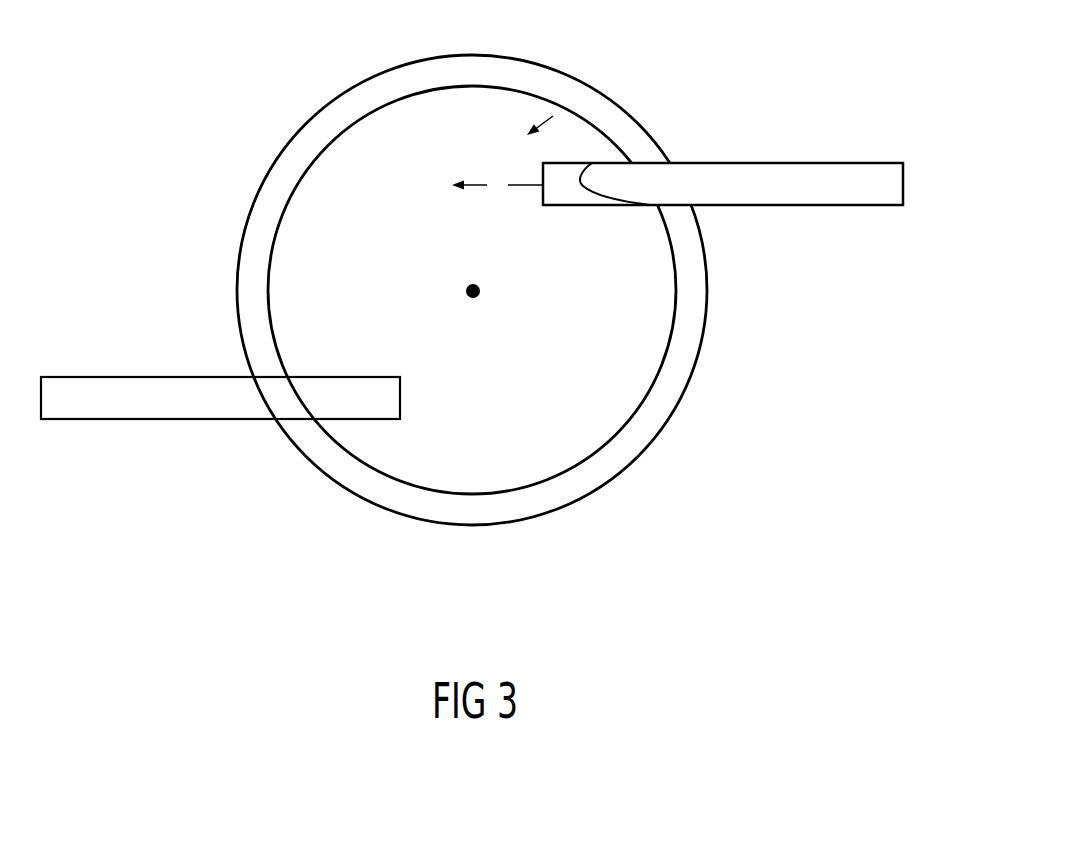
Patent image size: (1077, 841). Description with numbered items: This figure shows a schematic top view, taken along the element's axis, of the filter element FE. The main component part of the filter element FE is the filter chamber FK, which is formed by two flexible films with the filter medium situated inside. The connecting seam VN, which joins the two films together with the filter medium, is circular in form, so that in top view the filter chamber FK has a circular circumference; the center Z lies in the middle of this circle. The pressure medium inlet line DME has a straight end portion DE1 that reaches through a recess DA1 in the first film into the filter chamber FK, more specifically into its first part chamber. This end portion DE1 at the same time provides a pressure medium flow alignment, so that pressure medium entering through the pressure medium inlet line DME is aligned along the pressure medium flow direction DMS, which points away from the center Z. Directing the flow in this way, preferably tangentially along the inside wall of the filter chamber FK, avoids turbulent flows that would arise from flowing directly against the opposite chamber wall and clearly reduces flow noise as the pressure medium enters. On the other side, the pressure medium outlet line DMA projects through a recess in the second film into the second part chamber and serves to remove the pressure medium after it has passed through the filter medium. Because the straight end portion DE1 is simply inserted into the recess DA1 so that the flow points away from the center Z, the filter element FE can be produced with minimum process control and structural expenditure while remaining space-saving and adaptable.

The filter element FE is at (640, 551).
The connecting seam VN is at (670, 378).
The pressure medium outlet line DMA is at (158, 420).
The pressure medium inlet line DME is at (757, 163).
The recess DA1 is at (592, 163).
The end portion DE1 is at (572, 207).
The pressure medium flow direction DMS is at (472, 185).
The filter chamber FK is at (533, 130).
The center Z is at (466, 291).